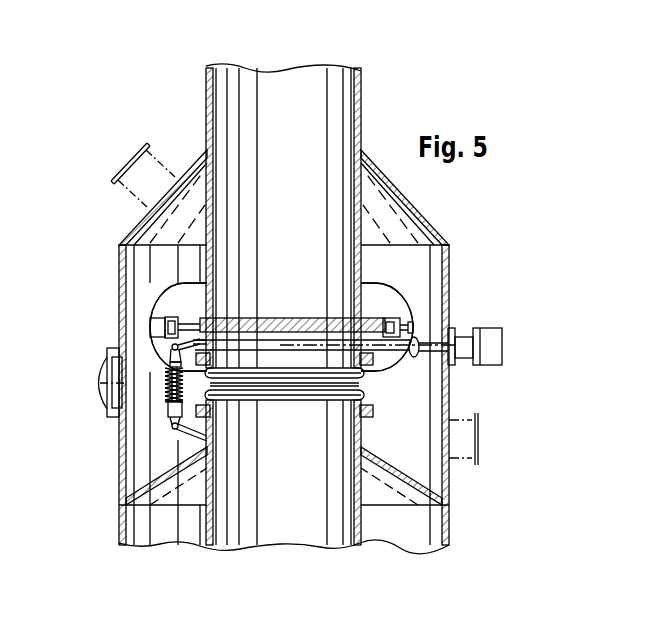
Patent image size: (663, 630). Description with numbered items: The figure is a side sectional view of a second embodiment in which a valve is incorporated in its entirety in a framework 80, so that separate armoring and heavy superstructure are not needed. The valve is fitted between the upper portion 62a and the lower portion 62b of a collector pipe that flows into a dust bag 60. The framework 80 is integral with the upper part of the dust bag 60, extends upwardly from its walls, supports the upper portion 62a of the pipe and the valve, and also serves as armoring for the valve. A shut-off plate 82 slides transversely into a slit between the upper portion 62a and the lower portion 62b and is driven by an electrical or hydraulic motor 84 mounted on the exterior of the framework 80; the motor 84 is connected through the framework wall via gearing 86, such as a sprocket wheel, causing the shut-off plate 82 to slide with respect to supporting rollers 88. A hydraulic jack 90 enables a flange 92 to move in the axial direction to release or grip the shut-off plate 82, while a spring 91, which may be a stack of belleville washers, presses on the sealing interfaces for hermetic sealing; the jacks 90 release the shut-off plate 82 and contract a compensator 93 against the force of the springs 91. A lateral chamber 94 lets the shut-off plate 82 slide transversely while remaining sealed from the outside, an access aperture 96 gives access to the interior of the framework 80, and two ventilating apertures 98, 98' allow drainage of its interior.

The dust bag 60 is at (432, 530).
The upper portion of the collector pipe 62a is at (338, 120).
The lower portion of the collector pipe 62b is at (207, 528).
The framework 80 is at (448, 282).
The shut-off plate 82 is at (273, 327).
The motor 84 is at (505, 353).
The gearing 86 is at (401, 353).
The supporting rollers 88 is at (163, 326).
The hydraulic jack 90 is at (166, 407).
The spring 91 is at (167, 383).
The flange 92 is at (160, 338).
The compensator 93 is at (363, 398).
The lateral chamber 94 is at (393, 291).
The access aperture 96 is at (97, 394).
The ventilating aperture 98 is at (484, 444).
The ventilating aperture 98' is at (143, 152).